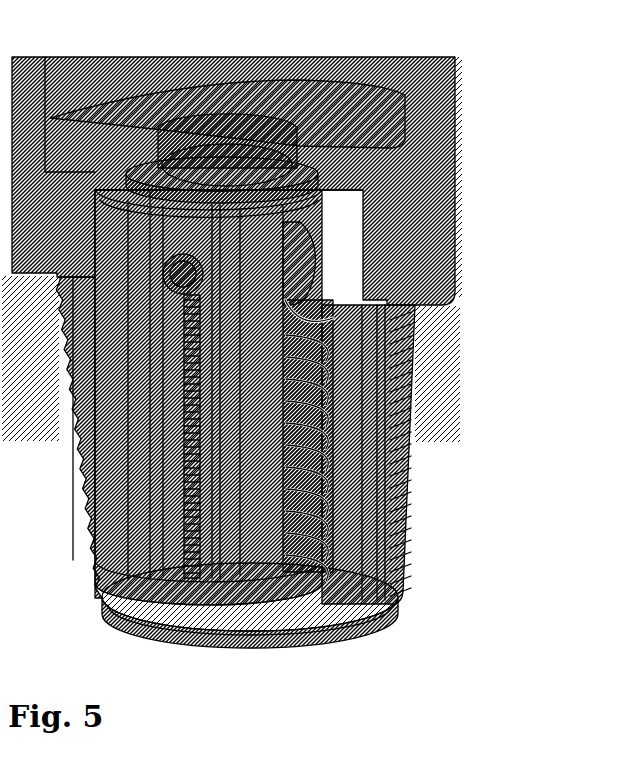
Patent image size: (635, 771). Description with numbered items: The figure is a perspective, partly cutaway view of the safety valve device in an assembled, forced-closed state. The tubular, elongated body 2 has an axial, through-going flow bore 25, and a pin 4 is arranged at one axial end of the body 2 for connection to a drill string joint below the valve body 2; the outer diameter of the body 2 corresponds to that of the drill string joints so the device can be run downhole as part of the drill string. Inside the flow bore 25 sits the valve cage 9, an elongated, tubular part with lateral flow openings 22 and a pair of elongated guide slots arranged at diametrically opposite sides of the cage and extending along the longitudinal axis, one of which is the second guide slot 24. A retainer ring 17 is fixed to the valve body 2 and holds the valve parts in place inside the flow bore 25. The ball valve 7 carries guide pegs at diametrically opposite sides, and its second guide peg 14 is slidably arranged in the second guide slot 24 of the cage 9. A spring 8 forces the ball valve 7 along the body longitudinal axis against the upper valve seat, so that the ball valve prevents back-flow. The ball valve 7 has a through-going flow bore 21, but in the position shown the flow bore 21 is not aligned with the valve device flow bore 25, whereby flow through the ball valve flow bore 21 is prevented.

The body 2 is at (452, 81).
The flow bore 25 is at (173, 108).
The ball valve 7 is at (245, 150).
The flow bore 21 is at (302, 248).
The second guide peg 14 is at (177, 268).
The second guide slot 24 is at (195, 339).
The pin 4 is at (419, 323).
The lateral flow openings 22 is at (322, 300).
The spring 8 is at (335, 473).
The valve cage 9 is at (270, 556).
The retainer ring 17 is at (116, 626).